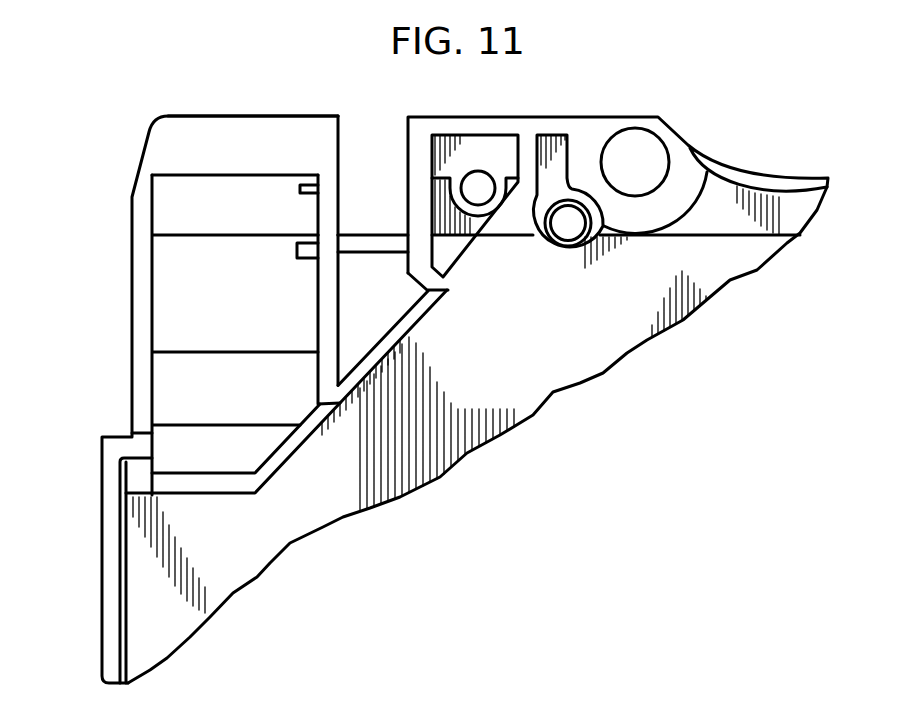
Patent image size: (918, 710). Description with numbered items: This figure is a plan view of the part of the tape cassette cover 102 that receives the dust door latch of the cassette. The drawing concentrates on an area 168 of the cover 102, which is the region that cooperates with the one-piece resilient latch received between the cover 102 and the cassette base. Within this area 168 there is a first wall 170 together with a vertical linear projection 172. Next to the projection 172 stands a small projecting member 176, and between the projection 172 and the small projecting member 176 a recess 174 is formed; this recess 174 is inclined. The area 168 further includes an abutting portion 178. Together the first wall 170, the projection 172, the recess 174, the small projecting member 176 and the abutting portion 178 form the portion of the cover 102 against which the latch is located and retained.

The cassette cover 102 is at (570, 375).
The area 168 is at (118, 340).
The first wall 170 is at (330, 289).
The vertical linear projection 172 is at (308, 260).
The recess 174 is at (302, 218).
The small projecting member 176 is at (305, 186).
The abutting portion 178 is at (198, 175).